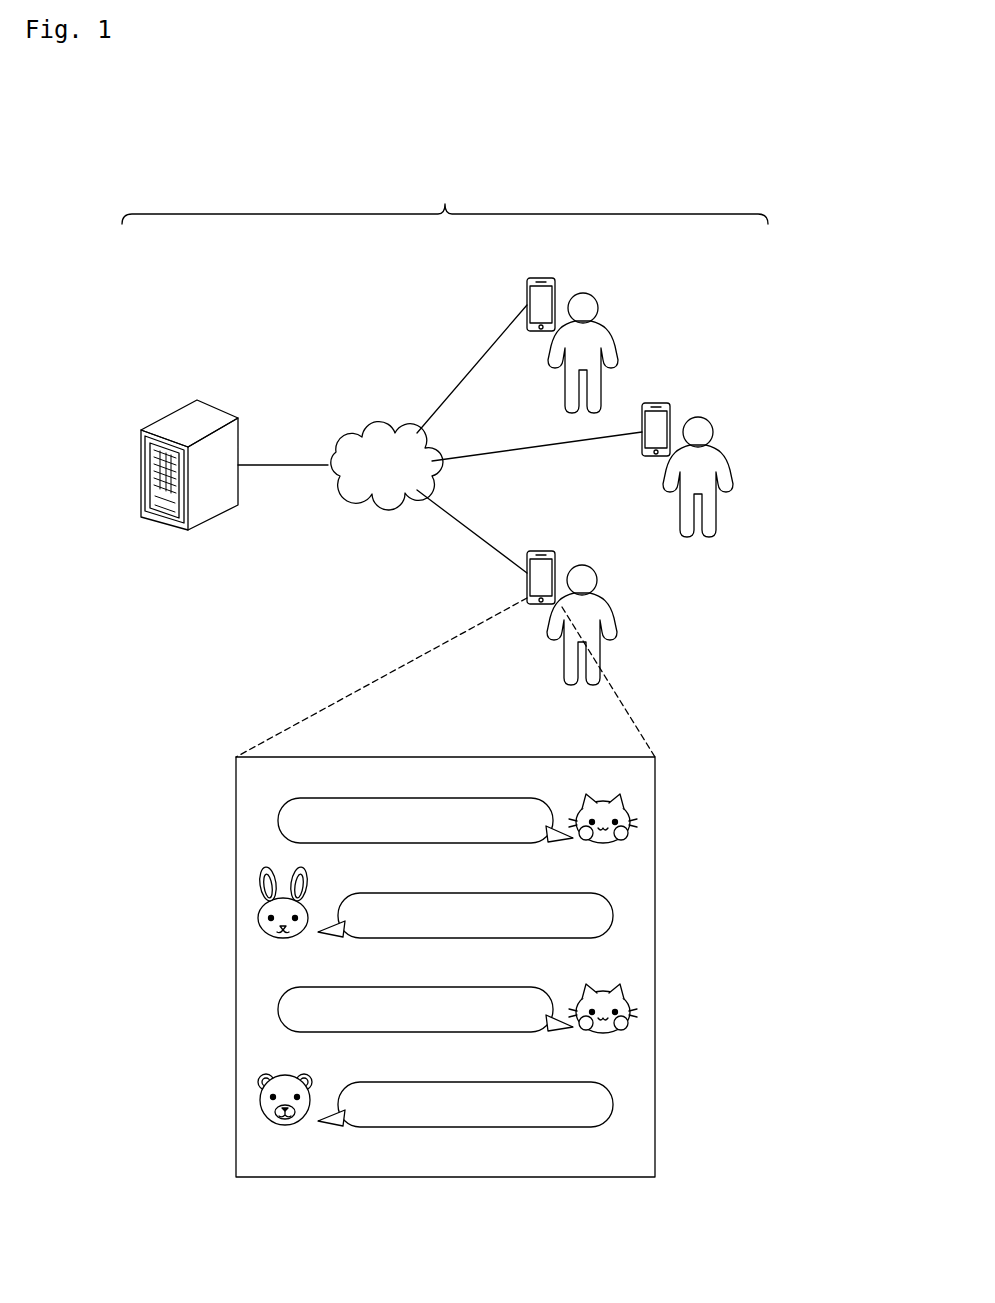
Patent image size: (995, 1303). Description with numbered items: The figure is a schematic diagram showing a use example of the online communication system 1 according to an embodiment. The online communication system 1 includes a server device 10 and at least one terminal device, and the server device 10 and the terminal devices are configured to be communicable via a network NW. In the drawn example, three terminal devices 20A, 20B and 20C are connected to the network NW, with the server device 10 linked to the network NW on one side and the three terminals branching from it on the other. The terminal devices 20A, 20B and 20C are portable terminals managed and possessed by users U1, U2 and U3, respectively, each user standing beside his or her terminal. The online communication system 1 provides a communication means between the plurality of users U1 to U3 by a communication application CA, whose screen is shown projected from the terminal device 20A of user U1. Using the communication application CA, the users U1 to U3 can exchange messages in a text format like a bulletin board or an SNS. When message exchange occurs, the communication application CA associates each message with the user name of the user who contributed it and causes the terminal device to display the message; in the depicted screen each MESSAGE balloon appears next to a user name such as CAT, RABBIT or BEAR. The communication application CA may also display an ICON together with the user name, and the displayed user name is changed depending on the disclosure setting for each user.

The online communication system 1 is at (445, 202).
The server device 10 is at (186, 410).
The network NW is at (387, 466).
The terminal device 20A is at (541, 551).
The terminal device 20B is at (656, 403).
The terminal device 20C is at (541, 277).
The user U1 is at (609, 600).
The user U2 is at (724, 452).
The user U3 is at (609, 328).
The communication application CA is at (445, 757).
The message MESSAGE is at (276, 816).
The icon ICON is at (636, 810).